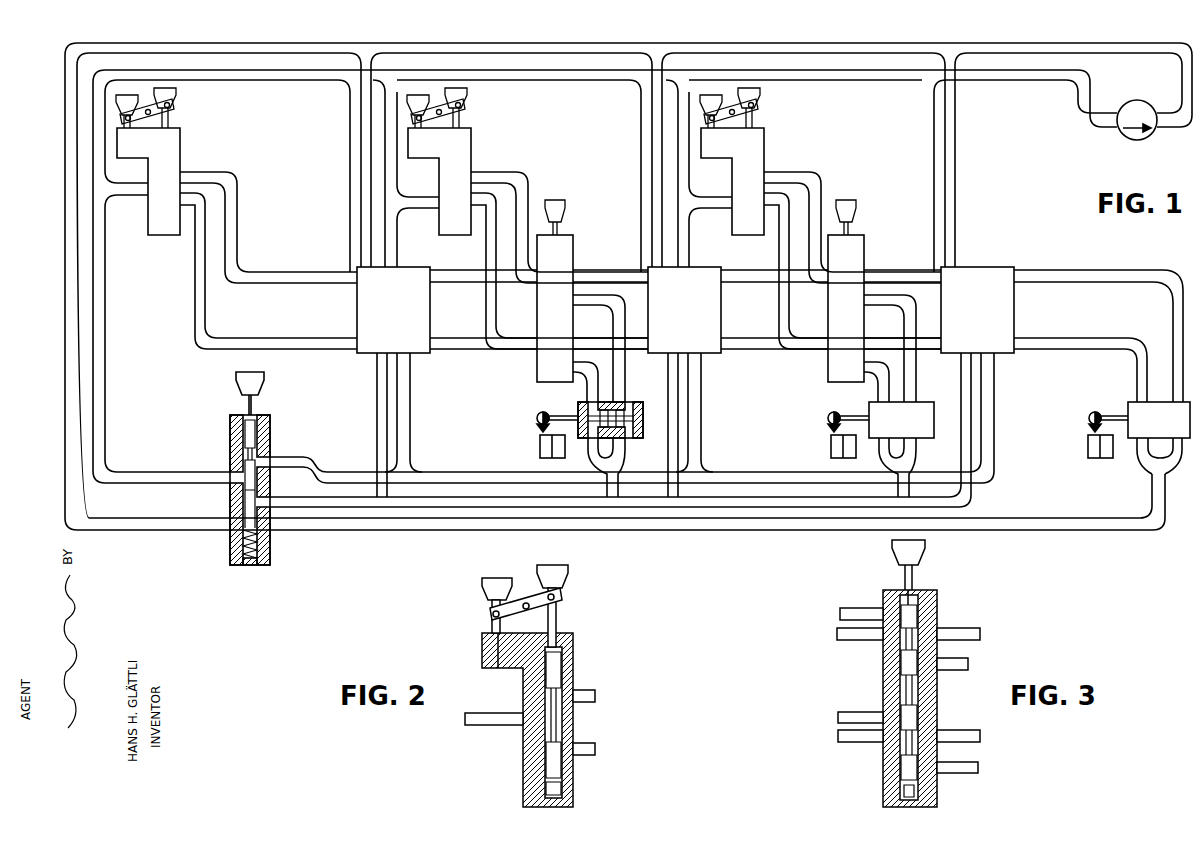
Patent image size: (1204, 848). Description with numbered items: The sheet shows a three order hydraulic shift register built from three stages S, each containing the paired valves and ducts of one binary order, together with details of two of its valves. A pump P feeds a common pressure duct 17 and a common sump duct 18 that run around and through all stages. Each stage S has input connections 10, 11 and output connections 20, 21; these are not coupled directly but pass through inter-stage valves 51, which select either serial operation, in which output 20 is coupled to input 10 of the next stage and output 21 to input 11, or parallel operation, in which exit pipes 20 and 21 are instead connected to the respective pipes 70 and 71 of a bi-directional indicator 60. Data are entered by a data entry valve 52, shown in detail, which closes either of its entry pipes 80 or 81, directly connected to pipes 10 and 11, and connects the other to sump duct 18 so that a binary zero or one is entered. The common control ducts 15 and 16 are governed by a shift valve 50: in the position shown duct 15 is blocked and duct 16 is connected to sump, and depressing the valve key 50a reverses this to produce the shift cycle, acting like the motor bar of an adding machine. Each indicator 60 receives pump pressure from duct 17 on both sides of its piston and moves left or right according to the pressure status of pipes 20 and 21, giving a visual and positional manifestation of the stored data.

In FIG. 1, the input connection 10 is at (308, 272).
In FIG. 3, the input connection 10 is at (968, 634).
In FIG. 1, the input connection 11 is at (303, 338).
In FIG. 3, the input connection 11 is at (966, 740).
In FIG. 1, the common control duct 15 is at (377, 382).
In FIG. 1, the common control duct 16 is at (410, 382).
In FIG. 1, the pressure duct 17 is at (1102, 45).
In FIG. 1, the sump duct 18 is at (105, 178).
In FIG. 2, the sump duct 18 is at (500, 725).
In FIG. 1, the output connection 20 is at (476, 283).
In FIG. 3, the output connection 20 is at (858, 636).
In FIG. 1, the output connection 21 is at (472, 340).
In FIG. 3, the output connection 21 is at (858, 738).
In FIG. 1, the shift valve 50 is at (249, 468).
In FIG. 1, the valve key 50a is at (238, 380).
In FIG. 1, the inter-stage valve 51 is at (573, 248).
In FIG. 3, the inter-stage valve 51 is at (935, 595).
In FIG. 1, the data entry valve 52 is at (180, 135).
In FIG. 2, the data entry valve 52 is at (570, 645).
In FIG. 1, the bi-directional indicator 60 is at (578, 406).
In FIG. 1, the indicator entry pipe 70 is at (612, 305).
In FIG. 3, the indicator entry pipe 70 is at (945, 667).
In FIG. 1, the indicator pipe 71 is at (588, 372).
In FIG. 3, the indicator pipe 71 is at (948, 773).
In FIG. 1, the entry pipe 80 is at (212, 170).
In FIG. 2, the entry pipe 80 is at (590, 690).
In FIG. 3, the entry pipe 80 is at (850, 608).
In FIG. 1, the entry pipe 81 is at (195, 255).
In FIG. 2, the entry pipe 81 is at (587, 757).
In FIG. 3, the entry pipe 81 is at (860, 715).
In FIG. 1, the stage S is at (402, 272).
In FIG. 1, the pump P is at (1137, 120).